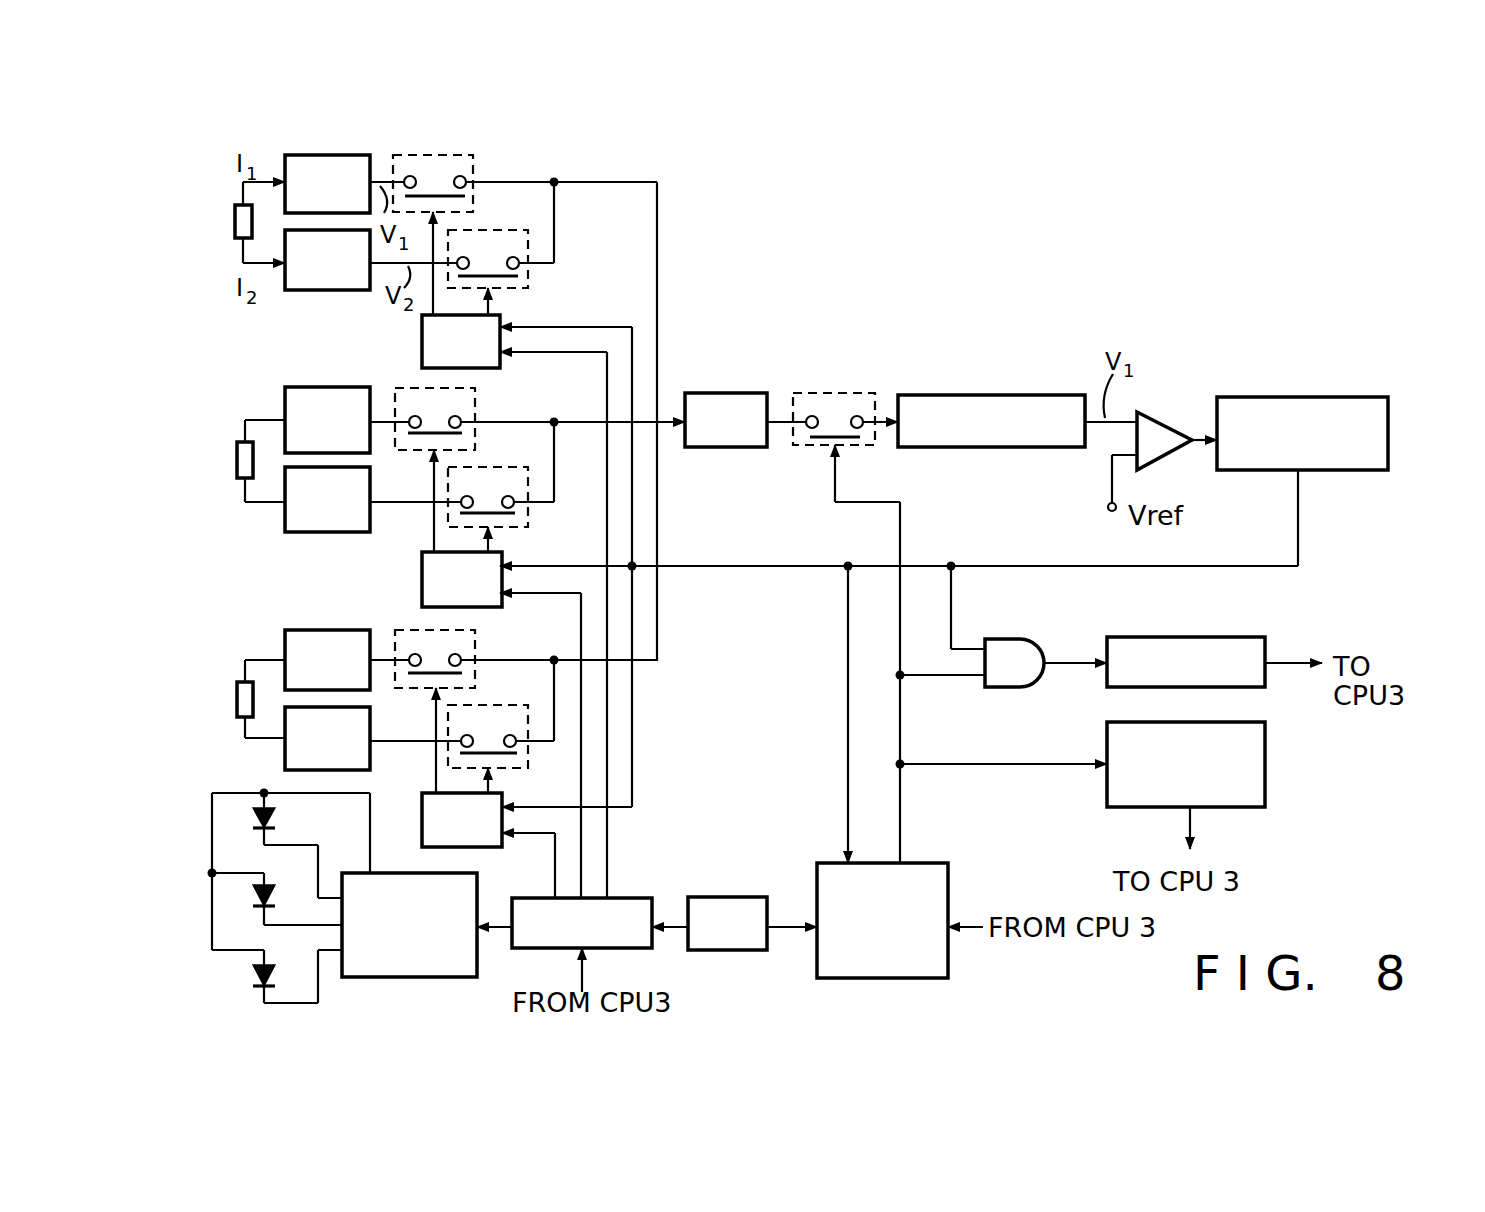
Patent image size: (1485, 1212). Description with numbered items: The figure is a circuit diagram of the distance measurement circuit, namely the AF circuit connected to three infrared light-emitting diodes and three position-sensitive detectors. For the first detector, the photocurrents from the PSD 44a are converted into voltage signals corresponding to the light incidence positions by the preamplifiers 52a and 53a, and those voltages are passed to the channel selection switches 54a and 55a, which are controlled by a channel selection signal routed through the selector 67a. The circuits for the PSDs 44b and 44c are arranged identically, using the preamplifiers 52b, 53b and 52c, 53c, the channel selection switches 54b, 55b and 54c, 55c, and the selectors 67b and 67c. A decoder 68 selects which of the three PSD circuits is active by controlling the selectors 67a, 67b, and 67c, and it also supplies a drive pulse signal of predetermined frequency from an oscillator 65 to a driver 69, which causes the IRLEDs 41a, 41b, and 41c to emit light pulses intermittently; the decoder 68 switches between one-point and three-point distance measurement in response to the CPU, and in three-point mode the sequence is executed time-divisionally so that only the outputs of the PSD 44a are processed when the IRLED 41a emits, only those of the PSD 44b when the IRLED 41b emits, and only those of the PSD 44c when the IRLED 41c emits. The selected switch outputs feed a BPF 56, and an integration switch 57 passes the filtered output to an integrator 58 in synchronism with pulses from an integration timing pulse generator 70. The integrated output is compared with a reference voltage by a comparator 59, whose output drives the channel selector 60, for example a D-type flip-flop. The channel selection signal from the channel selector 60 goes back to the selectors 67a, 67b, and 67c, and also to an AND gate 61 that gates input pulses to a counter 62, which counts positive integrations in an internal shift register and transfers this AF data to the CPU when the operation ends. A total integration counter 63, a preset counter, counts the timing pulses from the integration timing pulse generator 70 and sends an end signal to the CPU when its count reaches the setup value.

The IRLED 41a is at (278, 822).
The IRLED 41b is at (272, 894).
The IRLED 41c is at (270, 968).
The PSD 44a is at (235, 218).
The PSD 44b is at (237, 463).
The PSD 44c is at (237, 700).
The preamplifier 52a is at (376, 150).
The preamplifier 52b is at (305, 386).
The preamplifier 52c is at (312, 630).
The preamplifier 53a is at (318, 290).
The preamplifier 53b is at (308, 532).
The preamplifier 53c is at (365, 733).
The channel selection switch 54a is at (474, 162).
The channel selection switch 54b is at (476, 398).
The channel selection switch 54c is at (476, 655).
The channel selection switch 55a is at (508, 230).
The channel selection switch 55b is at (497, 467).
The channel selection switch 55c is at (495, 705).
The BPF 56 is at (748, 393).
The integration switch 57 is at (851, 393).
The integrator 58 is at (990, 395).
The comparator 59 is at (1167, 420).
The channel selector 60 is at (1308, 397).
The AND gate 61 is at (1020, 648).
The counter 62 is at (1235, 637).
The total integration counter 63 is at (1265, 778).
The oscillator 65 is at (733, 897).
The selector 67a is at (422, 356).
The selector 67b is at (422, 578).
The selector 67c is at (422, 807).
The decoder 68 is at (632, 900).
The driver 69 is at (470, 890).
The integration timing pulse generator 70 is at (943, 907).